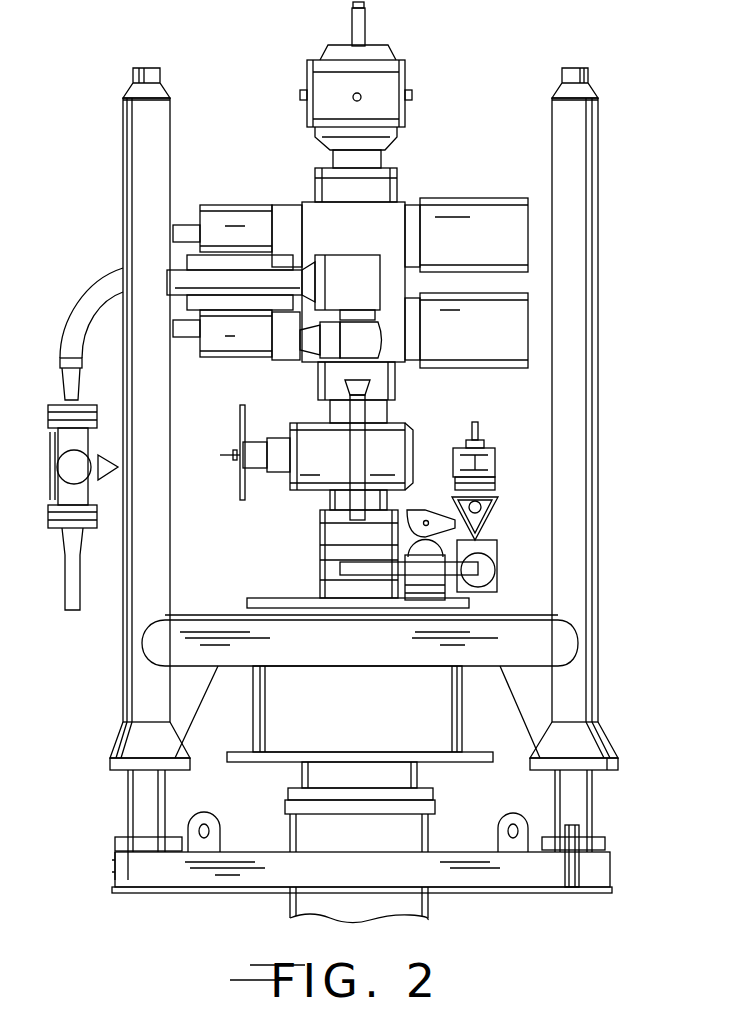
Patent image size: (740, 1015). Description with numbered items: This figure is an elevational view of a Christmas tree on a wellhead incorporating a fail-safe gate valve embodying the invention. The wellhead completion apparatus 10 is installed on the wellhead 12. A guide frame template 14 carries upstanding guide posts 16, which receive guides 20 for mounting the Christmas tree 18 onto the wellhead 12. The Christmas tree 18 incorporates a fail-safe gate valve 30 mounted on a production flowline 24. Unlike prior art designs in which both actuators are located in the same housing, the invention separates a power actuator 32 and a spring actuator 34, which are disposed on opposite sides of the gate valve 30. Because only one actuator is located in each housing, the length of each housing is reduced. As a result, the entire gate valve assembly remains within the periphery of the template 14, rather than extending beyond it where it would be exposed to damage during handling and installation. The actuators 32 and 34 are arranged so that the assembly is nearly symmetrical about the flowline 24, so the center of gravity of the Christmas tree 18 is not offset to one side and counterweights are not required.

The wellhead completion apparatus 10 is at (604, 404).
The wellhead 12 is at (407, 912).
The guide frame template 14 is at (200, 878).
The guide posts 16 is at (578, 799).
The Christmas tree 18 is at (424, 92).
The guides 20 is at (570, 610).
The production flowline 24 is at (390, 414).
The fail-safe gate valve 30 is at (405, 200).
The power actuator 32 is at (250, 205).
The spring actuator 34 is at (500, 200).